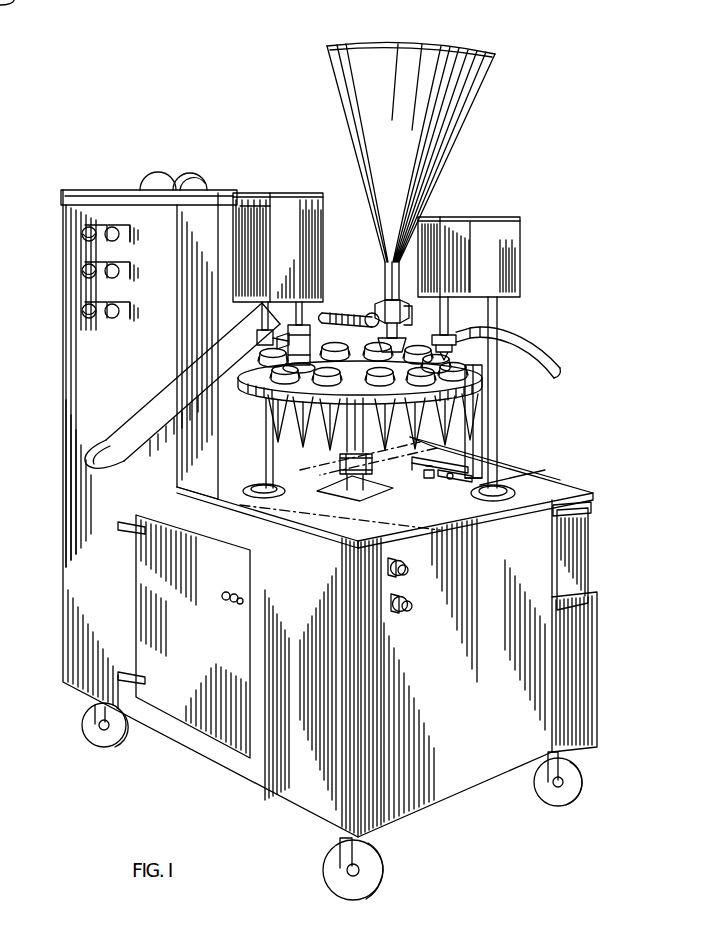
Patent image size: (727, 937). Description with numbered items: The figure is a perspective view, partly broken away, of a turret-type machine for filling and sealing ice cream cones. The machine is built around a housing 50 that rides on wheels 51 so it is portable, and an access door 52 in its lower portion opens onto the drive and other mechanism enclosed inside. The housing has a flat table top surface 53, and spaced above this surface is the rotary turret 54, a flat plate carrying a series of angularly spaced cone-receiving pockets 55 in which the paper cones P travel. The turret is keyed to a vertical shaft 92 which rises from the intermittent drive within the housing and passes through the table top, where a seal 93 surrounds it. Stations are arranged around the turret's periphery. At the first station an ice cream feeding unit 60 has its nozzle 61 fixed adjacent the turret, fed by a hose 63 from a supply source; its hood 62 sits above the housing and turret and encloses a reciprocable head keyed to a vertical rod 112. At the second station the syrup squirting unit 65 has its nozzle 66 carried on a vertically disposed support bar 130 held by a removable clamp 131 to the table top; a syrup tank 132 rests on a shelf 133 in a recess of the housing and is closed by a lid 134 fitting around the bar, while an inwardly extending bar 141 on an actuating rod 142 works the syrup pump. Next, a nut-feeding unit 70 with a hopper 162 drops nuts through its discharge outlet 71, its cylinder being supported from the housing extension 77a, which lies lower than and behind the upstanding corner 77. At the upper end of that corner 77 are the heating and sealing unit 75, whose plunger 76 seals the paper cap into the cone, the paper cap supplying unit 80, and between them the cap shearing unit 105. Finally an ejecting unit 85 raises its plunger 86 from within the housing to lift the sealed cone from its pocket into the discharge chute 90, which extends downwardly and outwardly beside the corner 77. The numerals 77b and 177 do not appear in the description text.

The housing 50 is at (588, 680).
The wheels 51 is at (385, 866).
The access door 52 is at (182, 704).
The table top surface 53 is at (528, 502).
The rotary turret 54 is at (322, 450).
The cone-receiving pockets 55 is at (274, 388).
The ice cream feeding unit 60 is at (515, 244).
The nozzle 61 is at (456, 348).
The hood 62 is at (497, 232).
The hose 63 is at (518, 341).
The syrup squirting unit 65 is at (473, 440).
The nozzle 66 is at (380, 346).
The nut-feeding unit 70 is at (382, 306).
The discharge outlet 71 is at (353, 318).
The heating and sealing unit 75 is at (312, 248).
The plunger 76 is at (284, 345).
The upstanding corner 77 is at (100, 215).
The extension 77a is at (301, 330).
The housing top 77b is at (262, 200).
The paper cap supplying unit 80 is at (203, 171).
The ejecting unit 85 is at (259, 492).
The plunger 86 is at (266, 452).
The discharge chute 90 is at (168, 402).
The vertical shaft 92 is at (350, 480).
The seal 93 is at (372, 468).
The cap shearing unit 105 is at (286, 332).
The rod 112 is at (497, 428).
The support bar 130 is at (476, 412).
The removable clamp 131 is at (448, 482).
The syrup tank 132 is at (578, 540).
The shelf 133 is at (583, 592).
The lid 134 is at (525, 480).
The inwardly extending bar 141 is at (428, 458).
The actuating rod 142 is at (428, 478).
The hopper 162 is at (403, 62).
The dome indicator 177 is at (158, 180).
The paper cone P is at (92, 448).